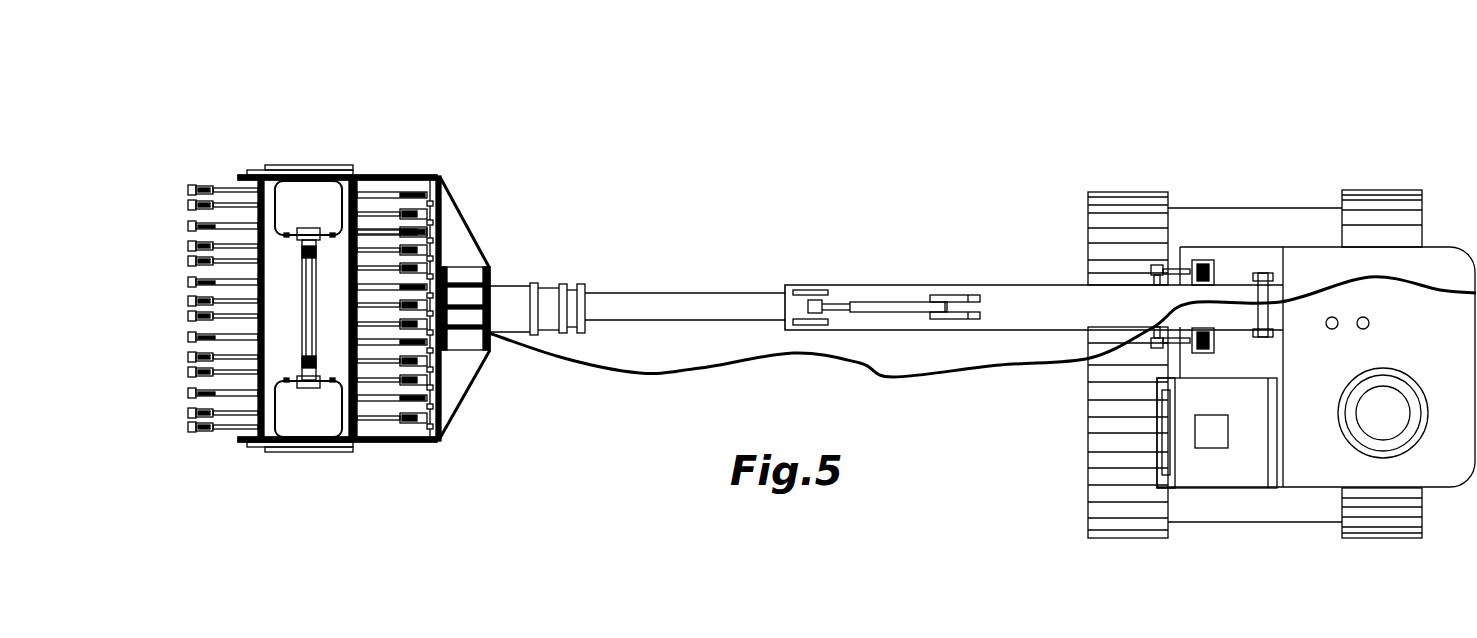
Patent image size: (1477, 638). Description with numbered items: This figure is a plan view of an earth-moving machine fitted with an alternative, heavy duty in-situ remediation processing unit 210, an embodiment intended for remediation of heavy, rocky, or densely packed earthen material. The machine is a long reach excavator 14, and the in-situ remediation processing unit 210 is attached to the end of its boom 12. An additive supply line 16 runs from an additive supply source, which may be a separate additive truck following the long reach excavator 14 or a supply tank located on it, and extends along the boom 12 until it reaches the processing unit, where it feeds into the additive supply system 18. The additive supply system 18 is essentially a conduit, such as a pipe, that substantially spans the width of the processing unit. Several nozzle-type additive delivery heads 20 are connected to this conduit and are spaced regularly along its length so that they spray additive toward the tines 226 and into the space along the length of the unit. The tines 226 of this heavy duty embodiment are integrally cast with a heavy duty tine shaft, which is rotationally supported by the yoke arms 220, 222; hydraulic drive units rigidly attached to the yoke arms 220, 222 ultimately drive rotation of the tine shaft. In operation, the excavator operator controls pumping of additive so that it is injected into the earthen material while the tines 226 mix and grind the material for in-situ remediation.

The boom 12 is at (823, 268).
The long reach excavator 14 is at (1272, 194).
The additive supply line 16 is at (928, 381).
The additive supply system 18 is at (430, 177).
The additive delivery heads 20 is at (441, 233).
The in-situ remediation processing unit 210 is at (311, 148).
The yoke arm 220 is at (428, 177).
The yoke arm 222 is at (410, 441).
The tines 226 is at (181, 187).